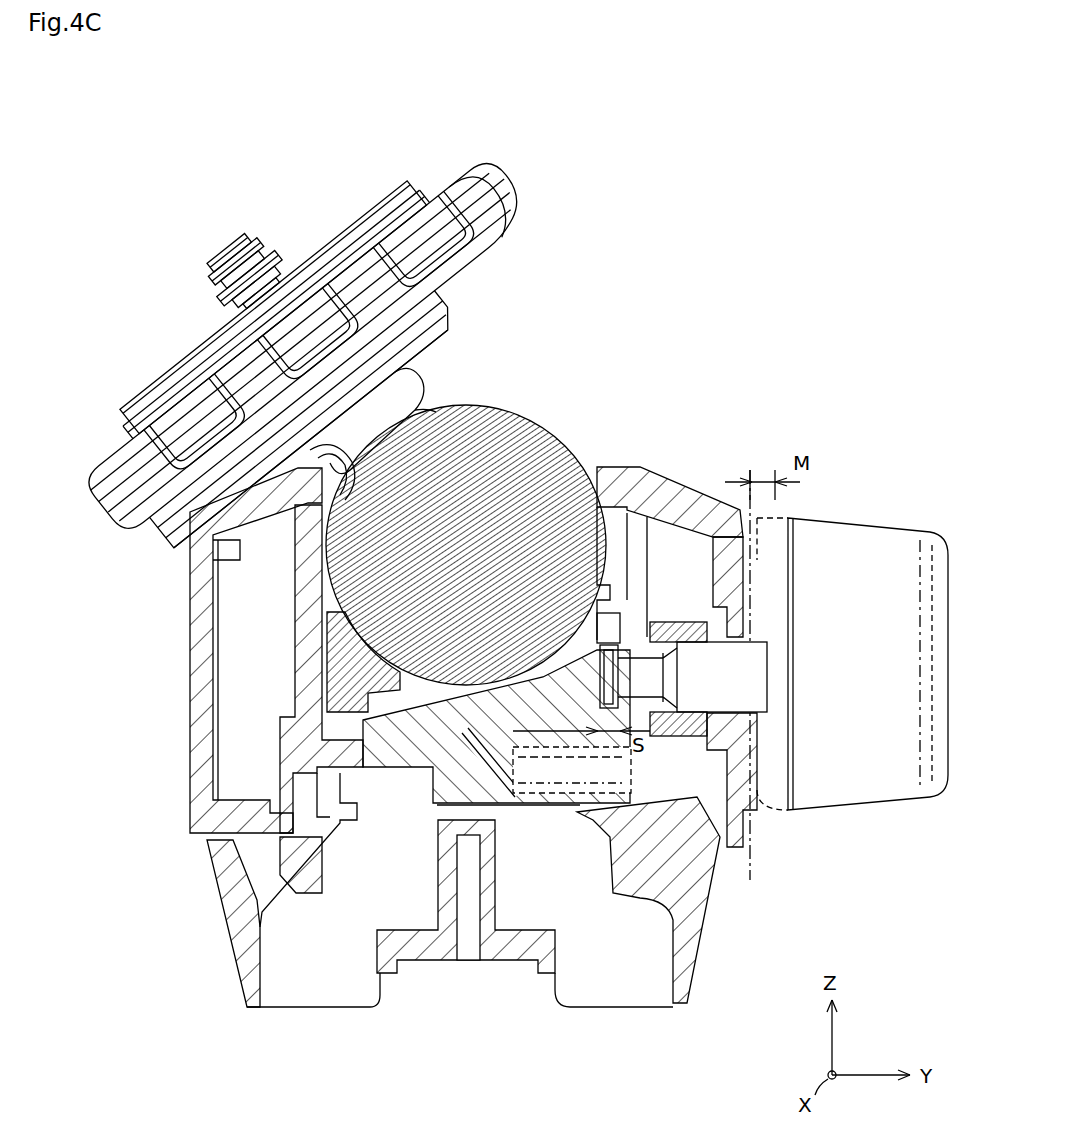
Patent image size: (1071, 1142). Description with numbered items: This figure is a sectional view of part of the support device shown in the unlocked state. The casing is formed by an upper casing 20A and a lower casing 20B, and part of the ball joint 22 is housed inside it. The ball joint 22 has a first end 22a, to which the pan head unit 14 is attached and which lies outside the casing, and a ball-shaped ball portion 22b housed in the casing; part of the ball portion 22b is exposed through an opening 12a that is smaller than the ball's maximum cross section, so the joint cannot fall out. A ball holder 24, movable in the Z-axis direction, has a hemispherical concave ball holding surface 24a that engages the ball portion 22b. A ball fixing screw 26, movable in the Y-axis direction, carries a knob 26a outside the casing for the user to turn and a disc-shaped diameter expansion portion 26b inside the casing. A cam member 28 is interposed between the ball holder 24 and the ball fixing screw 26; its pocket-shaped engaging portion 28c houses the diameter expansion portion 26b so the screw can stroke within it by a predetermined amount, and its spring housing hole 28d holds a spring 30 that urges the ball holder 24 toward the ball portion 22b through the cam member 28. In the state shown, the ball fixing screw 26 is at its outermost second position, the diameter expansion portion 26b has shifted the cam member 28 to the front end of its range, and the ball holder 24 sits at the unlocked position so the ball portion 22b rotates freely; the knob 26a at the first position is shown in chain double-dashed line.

The pan head unit 14 is at (527, 158).
The first end 22a is at (440, 304).
The ball joint 22 is at (413, 404).
The ball portion 22b is at (494, 557).
The opening 12a is at (600, 440).
The upper casing 20A is at (190, 623).
The lower casing 20B is at (233, 940).
The ball holder 24 is at (317, 653).
The ball holding surface 24a is at (372, 638).
The cam member 28 is at (546, 840).
The engaging portion 28c is at (620, 627).
The spring housing hole 28d is at (598, 782).
The ball fixing screw 26 is at (738, 691).
The knob 26a is at (882, 675).
The diameter expansion portion 26b is at (600, 697).
The spring 30 is at (652, 800).